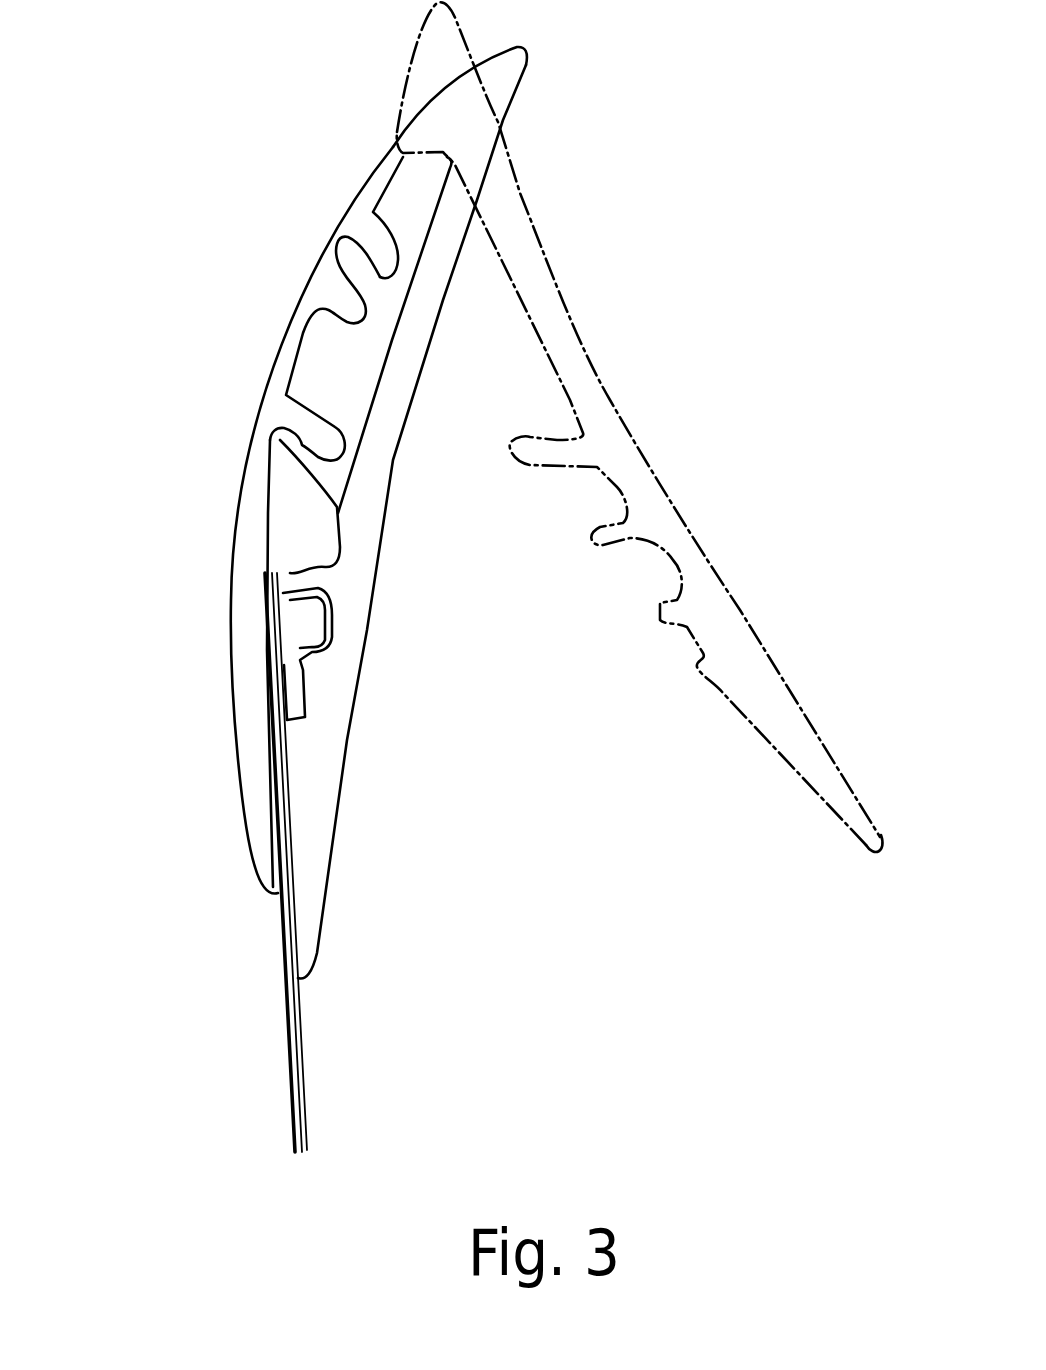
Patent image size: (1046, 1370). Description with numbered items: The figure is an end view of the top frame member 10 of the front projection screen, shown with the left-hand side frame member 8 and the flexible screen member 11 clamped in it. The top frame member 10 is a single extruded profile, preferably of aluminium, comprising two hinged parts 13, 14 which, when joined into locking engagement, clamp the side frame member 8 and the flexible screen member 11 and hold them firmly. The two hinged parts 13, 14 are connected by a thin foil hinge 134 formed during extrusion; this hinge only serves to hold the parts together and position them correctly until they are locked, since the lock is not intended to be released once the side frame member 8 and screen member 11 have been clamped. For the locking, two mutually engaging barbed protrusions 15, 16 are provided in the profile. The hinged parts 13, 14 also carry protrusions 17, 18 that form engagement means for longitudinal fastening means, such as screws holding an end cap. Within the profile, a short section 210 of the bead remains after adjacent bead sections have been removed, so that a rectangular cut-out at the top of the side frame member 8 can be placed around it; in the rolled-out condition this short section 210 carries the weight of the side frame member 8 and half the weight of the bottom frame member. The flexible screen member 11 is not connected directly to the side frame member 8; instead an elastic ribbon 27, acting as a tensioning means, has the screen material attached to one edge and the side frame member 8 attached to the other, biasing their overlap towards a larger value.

The side frame member 8 is at (310, 1030).
The top frame member 10 is at (467, 863).
The flexible screen member 11 is at (337, 614).
The hinged part 13 is at (250, 440).
The hinged part 14 is at (358, 688).
The barbed protrusion 15 is at (313, 337).
The barbed protrusion 16 is at (313, 490).
The protrusion 17 is at (343, 327).
The protrusion 18 is at (383, 277).
The elastic ribbon 27 is at (290, 1005).
The foil hinge 134 is at (393, 147).
The short section of the bead 210 is at (293, 622).